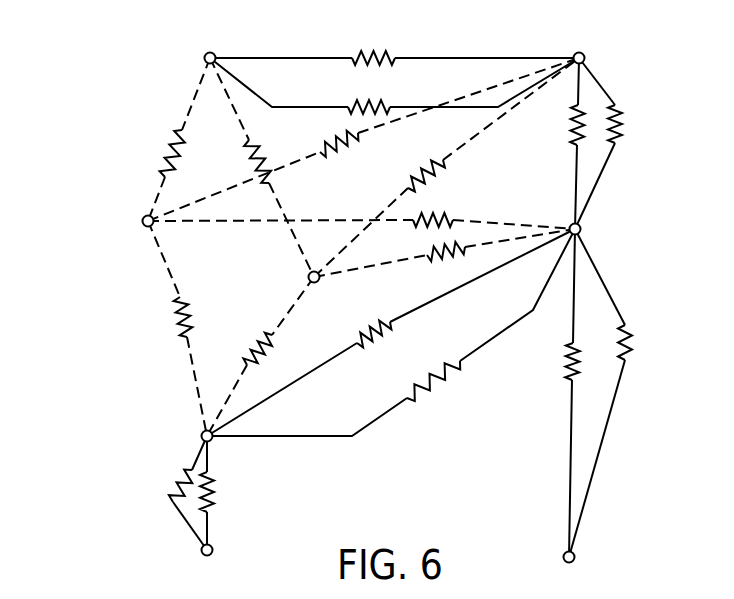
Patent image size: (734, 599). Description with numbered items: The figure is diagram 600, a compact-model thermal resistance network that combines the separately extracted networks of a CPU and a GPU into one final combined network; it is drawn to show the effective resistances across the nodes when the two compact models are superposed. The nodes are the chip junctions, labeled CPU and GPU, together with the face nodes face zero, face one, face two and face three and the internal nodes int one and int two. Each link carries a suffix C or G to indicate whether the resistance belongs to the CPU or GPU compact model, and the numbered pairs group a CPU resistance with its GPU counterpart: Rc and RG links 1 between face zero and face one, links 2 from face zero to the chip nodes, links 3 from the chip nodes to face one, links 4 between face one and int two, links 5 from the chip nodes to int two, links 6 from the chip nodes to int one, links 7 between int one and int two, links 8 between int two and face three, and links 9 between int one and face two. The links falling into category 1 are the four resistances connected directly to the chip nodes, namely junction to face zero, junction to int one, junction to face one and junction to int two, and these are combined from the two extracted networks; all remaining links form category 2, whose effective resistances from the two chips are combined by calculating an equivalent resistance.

The diagram 600 is at (100, 515).
The category 1 resistances 1 is at (394, 68).
The category 2 resistances 2 is at (222, 167).
The thermal resistances Rc3/RG3 from CPU/GPU to face 1 3 is at (363, 167).
The thermal resistances Rc4/RG4 between face 1 and int 2 4 is at (598, 143).
The thermal resistances Rc5/RG5 from CPU/GPU to int 2 5 is at (361, 248).
The thermal resistances Rc6/RG6 from CPU/GPU to int 1 6 is at (228, 328).
The thermal resistances Rc7/RG7 between int 1 and int 2 7 is at (391, 332).
The thermal resistances Rc8/RG8 between int 2 and face 3 8 is at (601, 393).
The thermal resistances Rc9/RG9 between int 1 and face 2 9 is at (200, 493).